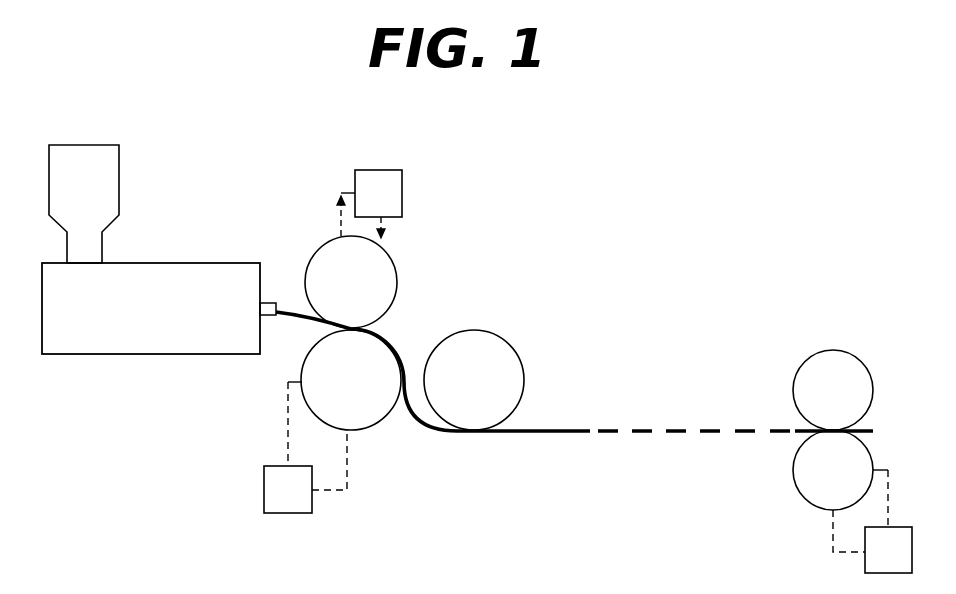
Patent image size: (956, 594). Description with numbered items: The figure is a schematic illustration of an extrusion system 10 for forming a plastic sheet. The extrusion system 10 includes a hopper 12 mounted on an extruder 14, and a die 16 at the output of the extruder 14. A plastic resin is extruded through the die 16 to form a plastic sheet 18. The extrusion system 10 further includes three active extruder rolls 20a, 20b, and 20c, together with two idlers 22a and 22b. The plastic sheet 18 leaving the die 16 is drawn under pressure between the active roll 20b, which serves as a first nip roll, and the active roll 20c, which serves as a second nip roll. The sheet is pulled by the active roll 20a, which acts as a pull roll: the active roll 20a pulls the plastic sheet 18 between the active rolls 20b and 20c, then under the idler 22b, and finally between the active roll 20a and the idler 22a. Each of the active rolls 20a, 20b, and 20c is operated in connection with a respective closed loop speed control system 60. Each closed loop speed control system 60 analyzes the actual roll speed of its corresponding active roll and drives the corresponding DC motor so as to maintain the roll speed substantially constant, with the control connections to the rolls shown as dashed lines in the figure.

The extrusion system 10 is at (326, 176).
The hopper 12 is at (105, 195).
The extruder 14 is at (117, 343).
The die 16 is at (269, 297).
The plastic sheet 18 is at (288, 323).
The active roll 20a is at (806, 482).
The active roll 20b is at (377, 263).
The active roll 20c is at (360, 413).
The idler 22a is at (833, 357).
The idler 22b is at (503, 358).
The closed loop speed control system 60 is at (588, 371).